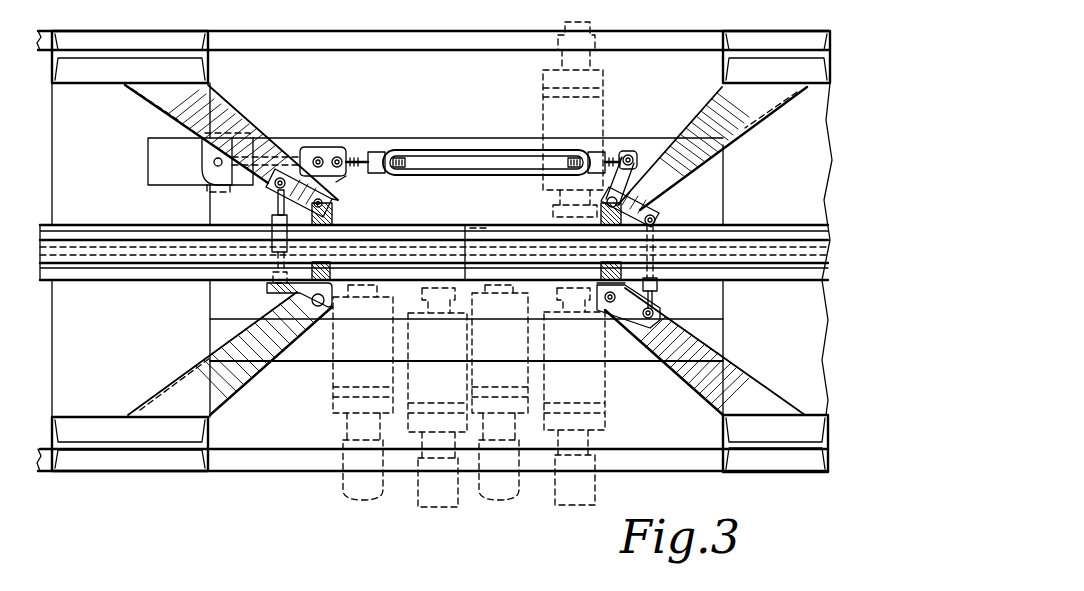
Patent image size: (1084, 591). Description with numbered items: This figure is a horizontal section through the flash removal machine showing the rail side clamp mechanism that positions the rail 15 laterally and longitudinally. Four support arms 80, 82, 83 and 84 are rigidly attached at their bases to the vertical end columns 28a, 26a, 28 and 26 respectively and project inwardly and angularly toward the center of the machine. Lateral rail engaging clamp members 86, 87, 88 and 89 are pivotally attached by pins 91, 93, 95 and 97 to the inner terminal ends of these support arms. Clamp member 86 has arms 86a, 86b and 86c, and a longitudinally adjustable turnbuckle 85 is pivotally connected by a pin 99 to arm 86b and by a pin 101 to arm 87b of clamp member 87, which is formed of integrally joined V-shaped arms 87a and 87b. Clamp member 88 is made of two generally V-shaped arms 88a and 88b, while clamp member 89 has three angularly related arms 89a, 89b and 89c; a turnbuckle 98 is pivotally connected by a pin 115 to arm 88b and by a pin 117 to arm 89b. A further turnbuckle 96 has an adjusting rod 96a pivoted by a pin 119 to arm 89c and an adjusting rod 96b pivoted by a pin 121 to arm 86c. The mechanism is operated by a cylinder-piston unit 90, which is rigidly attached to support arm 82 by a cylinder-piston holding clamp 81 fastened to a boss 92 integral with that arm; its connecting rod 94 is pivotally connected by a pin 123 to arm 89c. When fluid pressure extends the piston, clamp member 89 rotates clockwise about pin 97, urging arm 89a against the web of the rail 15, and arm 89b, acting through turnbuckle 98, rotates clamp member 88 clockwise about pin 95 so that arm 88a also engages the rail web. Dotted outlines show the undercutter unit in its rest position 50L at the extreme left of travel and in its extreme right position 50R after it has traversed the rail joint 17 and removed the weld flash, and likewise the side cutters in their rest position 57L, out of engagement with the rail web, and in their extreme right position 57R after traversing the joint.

The rail 15 is at (448, 230).
The rail joint 17 is at (480, 224).
The vertical end column 26 is at (163, 474).
The vertical end column 26a is at (165, 29).
The vertical end column 28 is at (756, 473).
The vertical end column 28a is at (770, 31).
The undercutter unit rest position 50L is at (336, 377).
The undercutter unit extreme right position 50R is at (500, 504).
The side cutter rest position 57L is at (441, 503).
The side cutter extreme right position 57R is at (576, 506).
The support arm 80 is at (746, 122).
The cylinder-piston holding clamp 81 is at (210, 190).
The support arm 82 is at (232, 112).
The support arm 83 is at (750, 378).
The support arm 84 is at (172, 385).
The turnbuckle 85 is at (660, 285).
The lateral clamp member 86 is at (657, 198).
The clamp member arm 86a is at (606, 242).
The clamp member arm 86b is at (657, 219).
The clamp member arm 86c is at (628, 151).
The lateral clamp member 87 is at (613, 267).
The V-shaped arm 87a is at (598, 283).
The V-shaped arm 87b is at (630, 335).
The lateral clamp member 88 is at (288, 296).
The V-shaped arm 88a is at (434, 252).
The V-shaped arm 88b is at (280, 292).
The clamp member 89 is at (340, 186).
The clamp member arm 89a is at (333, 212).
The clamp member arm 89b is at (268, 186).
The clamp member arm 89c is at (348, 178).
The cylinder-piston unit 90 is at (148, 153).
The pin 91 is at (638, 178).
The boss 92 is at (205, 170).
The pin 93 is at (611, 305).
The connecting rod 94 is at (303, 147).
The pin 95 is at (318, 310).
The turnbuckle 96 is at (467, 150).
The adjusting rod 96a is at (368, 150).
The adjusting rod 96b is at (604, 153).
The pin 97 is at (325, 204).
The turnbuckle 98 is at (272, 218).
The pin 99 is at (657, 240).
The pin 101 is at (655, 313).
The pin 115 is at (270, 286).
The pin 117 is at (293, 207).
The pin 119 is at (350, 150).
The pin 121 is at (640, 157).
The pin 123 is at (325, 148).